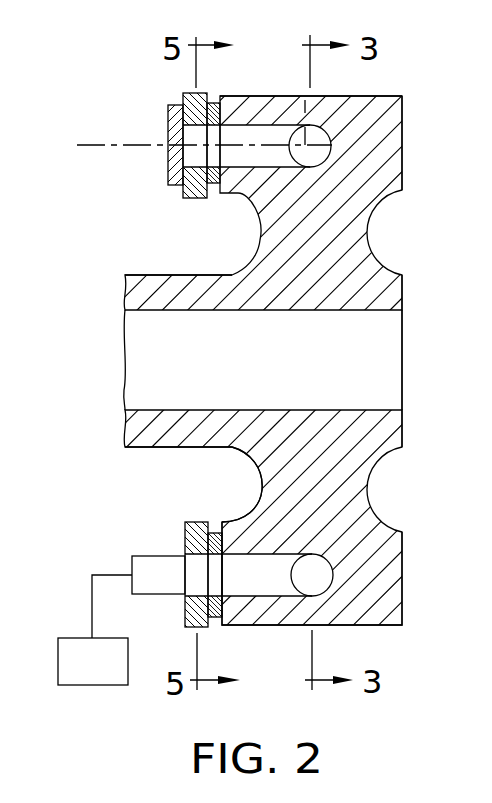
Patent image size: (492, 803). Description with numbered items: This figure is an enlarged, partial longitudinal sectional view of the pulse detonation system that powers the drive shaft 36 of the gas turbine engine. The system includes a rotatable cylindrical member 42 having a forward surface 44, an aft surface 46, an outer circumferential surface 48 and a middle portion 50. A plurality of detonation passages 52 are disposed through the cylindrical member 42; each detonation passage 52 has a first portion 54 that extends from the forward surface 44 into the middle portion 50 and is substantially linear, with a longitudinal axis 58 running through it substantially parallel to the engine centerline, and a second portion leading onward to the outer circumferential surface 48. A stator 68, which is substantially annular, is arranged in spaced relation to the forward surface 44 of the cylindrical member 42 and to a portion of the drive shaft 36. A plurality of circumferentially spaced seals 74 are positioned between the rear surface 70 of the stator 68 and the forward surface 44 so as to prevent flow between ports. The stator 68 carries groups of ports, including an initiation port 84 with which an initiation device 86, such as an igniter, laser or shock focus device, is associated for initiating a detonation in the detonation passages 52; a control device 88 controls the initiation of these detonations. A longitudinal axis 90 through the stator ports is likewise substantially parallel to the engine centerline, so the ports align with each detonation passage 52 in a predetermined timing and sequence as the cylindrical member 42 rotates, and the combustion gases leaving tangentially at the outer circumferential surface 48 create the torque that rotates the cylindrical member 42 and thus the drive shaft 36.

The drive shaft 36 is at (168, 447).
The rotatable cylindrical member 42 is at (408, 98).
The forward surface 44 is at (220, 521).
The aft surface 46 is at (403, 148).
The outer circumferential surface 48 is at (358, 96).
The middle portion 50 is at (378, 598).
The detonation passage 52 is at (447, 361).
The first portion 54 is at (250, 124).
The longitudinal axis 58 is at (300, 96).
The stator 68 is at (168, 104).
The rear surface 70 is at (183, 190).
The seal 74 is at (214, 186).
The initiation port 84 is at (172, 556).
The initiation device 86 is at (137, 557).
The control device 88 is at (108, 638).
The longitudinal axis 90 is at (168, 140).